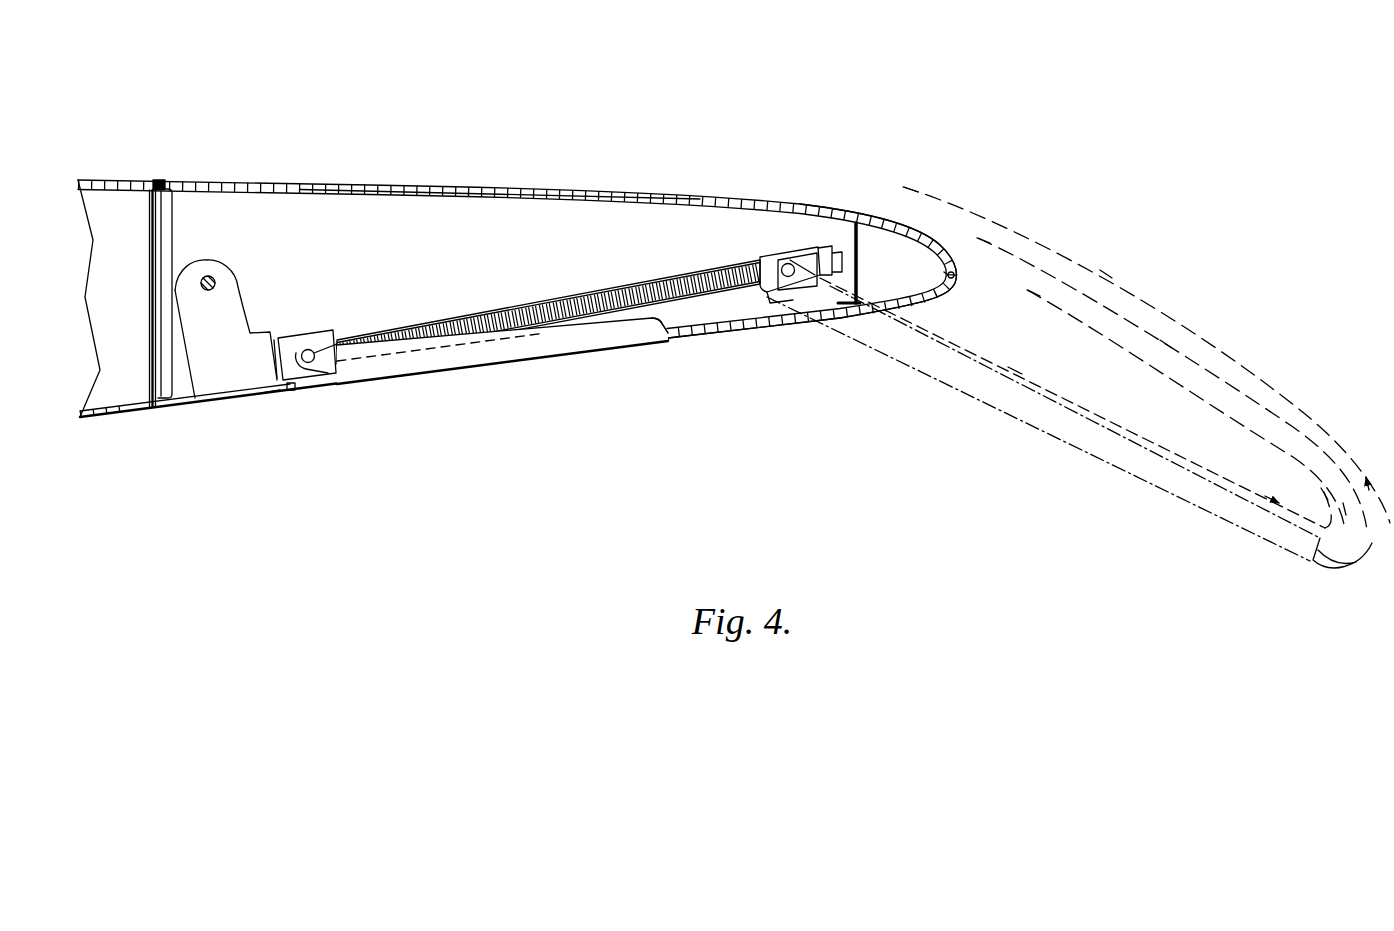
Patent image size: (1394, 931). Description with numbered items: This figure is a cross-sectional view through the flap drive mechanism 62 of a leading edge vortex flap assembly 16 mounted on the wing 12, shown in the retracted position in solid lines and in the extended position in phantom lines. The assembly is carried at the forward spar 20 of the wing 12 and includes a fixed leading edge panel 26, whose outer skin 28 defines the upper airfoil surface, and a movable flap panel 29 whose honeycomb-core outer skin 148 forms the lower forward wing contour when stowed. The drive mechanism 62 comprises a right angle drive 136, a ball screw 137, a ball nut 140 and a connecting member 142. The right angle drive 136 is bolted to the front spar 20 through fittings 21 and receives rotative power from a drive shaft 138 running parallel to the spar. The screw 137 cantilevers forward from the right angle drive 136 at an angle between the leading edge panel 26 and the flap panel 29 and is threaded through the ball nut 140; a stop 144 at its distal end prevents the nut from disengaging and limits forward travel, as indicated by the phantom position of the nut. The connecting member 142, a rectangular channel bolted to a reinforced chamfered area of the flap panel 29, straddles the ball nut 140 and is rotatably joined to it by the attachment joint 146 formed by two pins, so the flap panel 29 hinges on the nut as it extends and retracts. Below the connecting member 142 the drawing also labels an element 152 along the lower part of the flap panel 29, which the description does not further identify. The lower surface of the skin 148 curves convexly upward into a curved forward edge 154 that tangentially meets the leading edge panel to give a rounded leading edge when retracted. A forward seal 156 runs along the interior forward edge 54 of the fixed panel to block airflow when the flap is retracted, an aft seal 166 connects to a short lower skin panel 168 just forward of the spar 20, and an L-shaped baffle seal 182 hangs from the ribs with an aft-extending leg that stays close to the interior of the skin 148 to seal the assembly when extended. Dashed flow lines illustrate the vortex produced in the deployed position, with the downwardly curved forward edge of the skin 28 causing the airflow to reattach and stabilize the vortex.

The wing 12 is at (102, 200).
The vortex flap assembly 16 is at (721, 95).
The forward spar 20 is at (150, 269).
The fittings 21 is at (168, 202).
The leading edge panel 26 is at (423, 181).
The outer skin 28 is at (475, 188).
The flap panel 29 is at (743, 339).
The interior forward edge 54 is at (958, 272).
The drive mechanism 62 is at (231, 410).
The right angle drive 136 is at (245, 300).
The screw 137 is at (517, 302).
The drive shaft 138 is at (212, 278).
The ball nut 140 is at (325, 333).
The connecting member 142 is at (465, 352).
The stop 144 is at (820, 250).
The attachment joint 146 is at (316, 367).
The outer skin 148 is at (690, 347).
The seal plate 152 is at (537, 364).
The curved forward edge 154 is at (973, 320).
The forward seal 156 is at (943, 271).
The aft seal 166 is at (291, 395).
The lower skin panel 168 is at (268, 392).
The baffle seal 182 is at (858, 284).